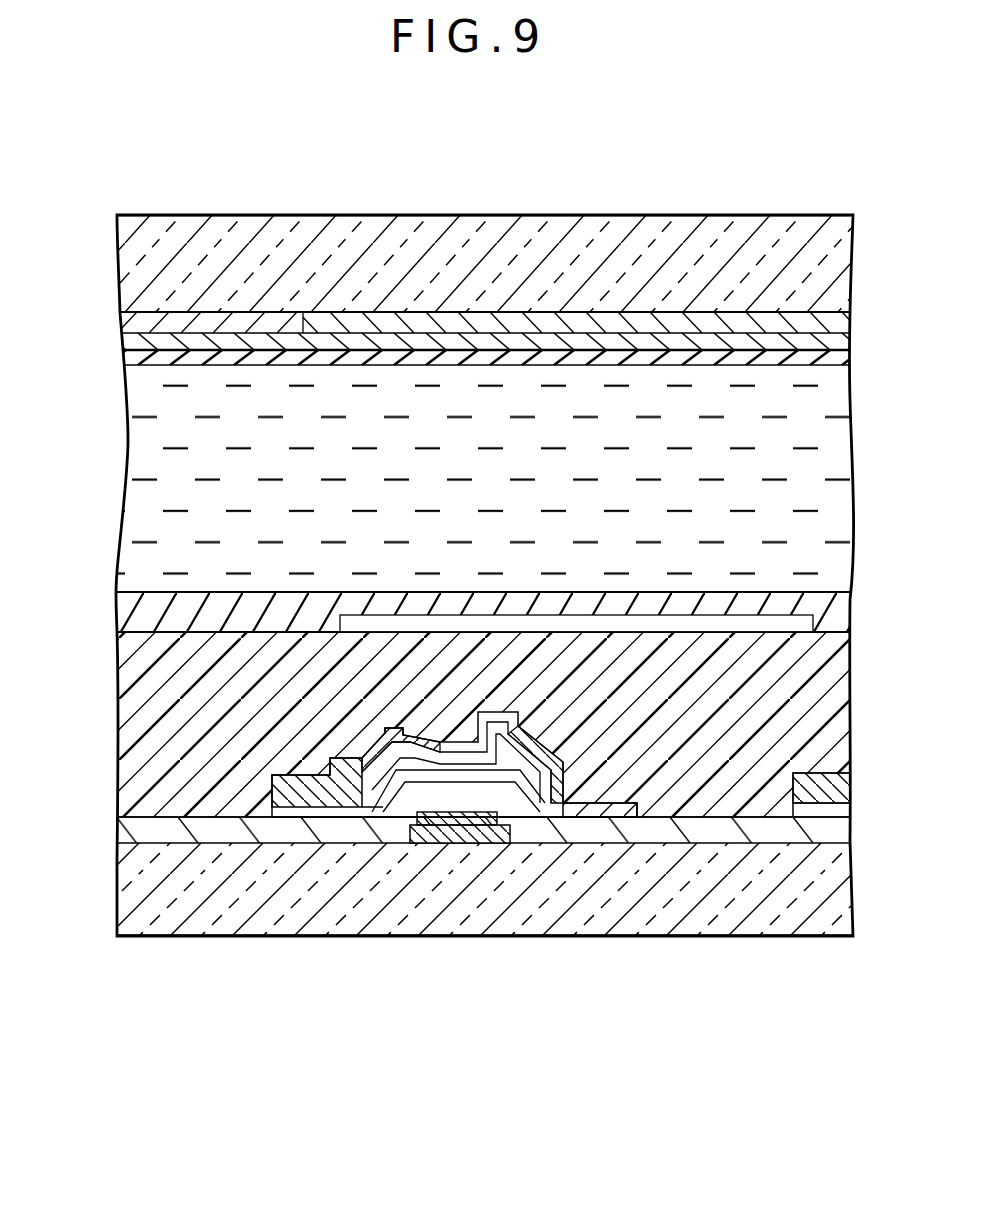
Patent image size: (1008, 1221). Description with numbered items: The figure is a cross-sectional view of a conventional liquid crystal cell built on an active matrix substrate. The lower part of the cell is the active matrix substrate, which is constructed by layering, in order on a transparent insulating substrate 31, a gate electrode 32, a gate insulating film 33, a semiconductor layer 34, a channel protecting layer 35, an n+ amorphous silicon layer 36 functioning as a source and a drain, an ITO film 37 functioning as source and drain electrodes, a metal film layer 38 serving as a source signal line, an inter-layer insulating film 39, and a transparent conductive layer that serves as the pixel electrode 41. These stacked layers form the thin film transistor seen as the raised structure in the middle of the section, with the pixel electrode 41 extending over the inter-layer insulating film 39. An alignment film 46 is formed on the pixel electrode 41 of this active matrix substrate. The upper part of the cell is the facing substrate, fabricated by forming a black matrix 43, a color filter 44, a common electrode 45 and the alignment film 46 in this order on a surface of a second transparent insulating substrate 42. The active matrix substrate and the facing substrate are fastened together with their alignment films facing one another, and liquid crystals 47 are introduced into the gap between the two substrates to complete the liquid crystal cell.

The transparent insulating substrate 31 is at (765, 922).
The gate electrode 32 is at (468, 832).
The gate insulating film 33 is at (183, 825).
The semiconductor layer 34 is at (372, 812).
The channel protecting layer 35 is at (503, 800).
The n+ amorphous silicon layer 36 is at (447, 808).
The ITO film 37 is at (333, 813).
The metal film layer 38 is at (290, 812).
The inter-layer insulating film 39 is at (830, 692).
The pixel electrode 41 is at (792, 626).
The transparent insulating substrate 42 is at (672, 238).
The black matrix 43 is at (275, 314).
The color filter 44 is at (453, 324).
The common electrode 45 is at (851, 344).
The alignment film 46 is at (827, 358).
The liquid crystals 47 is at (137, 437).